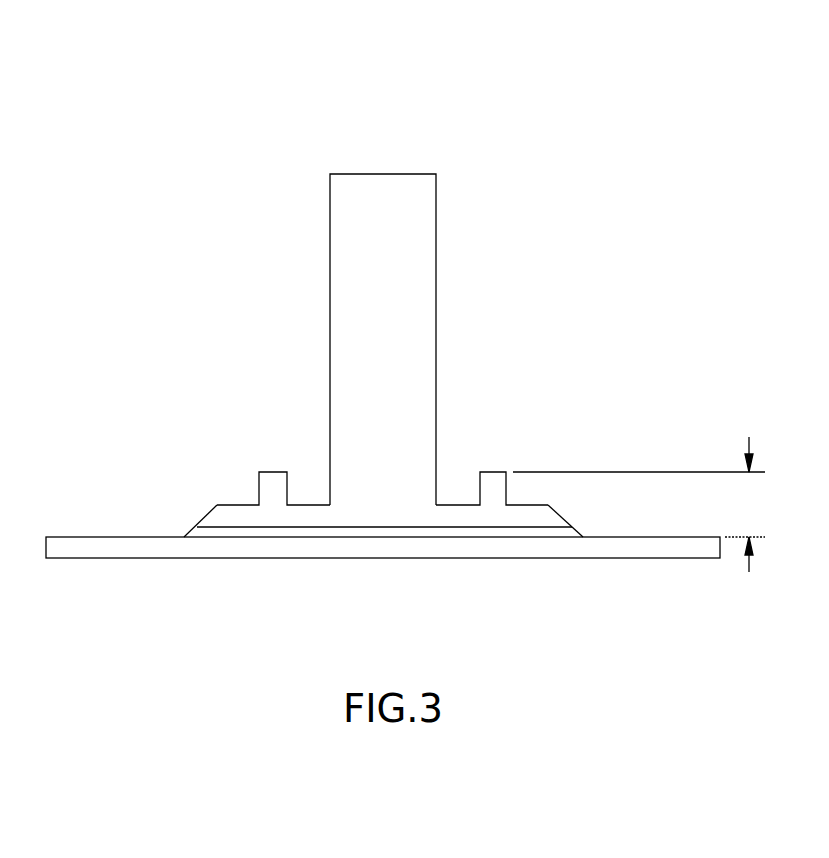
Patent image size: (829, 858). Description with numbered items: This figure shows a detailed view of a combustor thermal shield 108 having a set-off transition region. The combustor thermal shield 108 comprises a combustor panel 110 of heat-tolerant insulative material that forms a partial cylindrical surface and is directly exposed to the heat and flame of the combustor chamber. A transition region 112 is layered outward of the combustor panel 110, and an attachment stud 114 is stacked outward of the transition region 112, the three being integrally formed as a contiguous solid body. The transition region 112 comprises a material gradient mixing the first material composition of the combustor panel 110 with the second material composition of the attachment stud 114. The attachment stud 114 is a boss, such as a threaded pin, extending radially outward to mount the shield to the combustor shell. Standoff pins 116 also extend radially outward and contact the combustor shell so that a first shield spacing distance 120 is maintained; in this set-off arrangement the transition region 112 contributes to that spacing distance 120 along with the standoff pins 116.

The combustor thermal shield 108 is at (410, 108).
The combustor panel 110 is at (73, 548).
The transition region 112 is at (237, 537).
The attachment stud 114 is at (340, 345).
The standoff pin 116 is at (273, 487).
The first shield spacing distance 120 is at (748, 440).